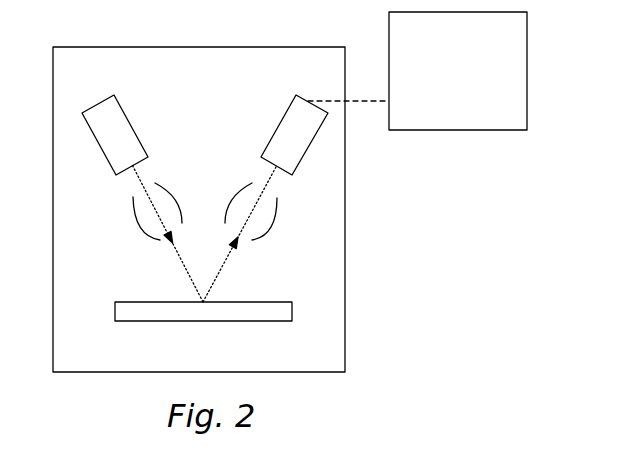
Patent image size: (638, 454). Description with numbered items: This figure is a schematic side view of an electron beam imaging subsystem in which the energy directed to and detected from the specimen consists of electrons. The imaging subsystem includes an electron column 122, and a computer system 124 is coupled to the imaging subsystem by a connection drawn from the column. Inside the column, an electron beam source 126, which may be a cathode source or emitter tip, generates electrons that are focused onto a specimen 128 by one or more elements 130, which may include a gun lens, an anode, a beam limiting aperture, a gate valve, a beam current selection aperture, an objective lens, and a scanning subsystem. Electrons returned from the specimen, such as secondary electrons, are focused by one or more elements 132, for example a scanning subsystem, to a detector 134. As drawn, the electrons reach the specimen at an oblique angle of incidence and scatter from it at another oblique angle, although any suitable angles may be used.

The electron column 122 is at (188, 46).
The computer system 124 is at (477, 112).
The electron beam source 126 is at (122, 107).
The specimen 128 is at (248, 302).
The one or more elements 130 is at (145, 228).
The one or more elements 132 is at (266, 229).
The detector 134 is at (287, 110).